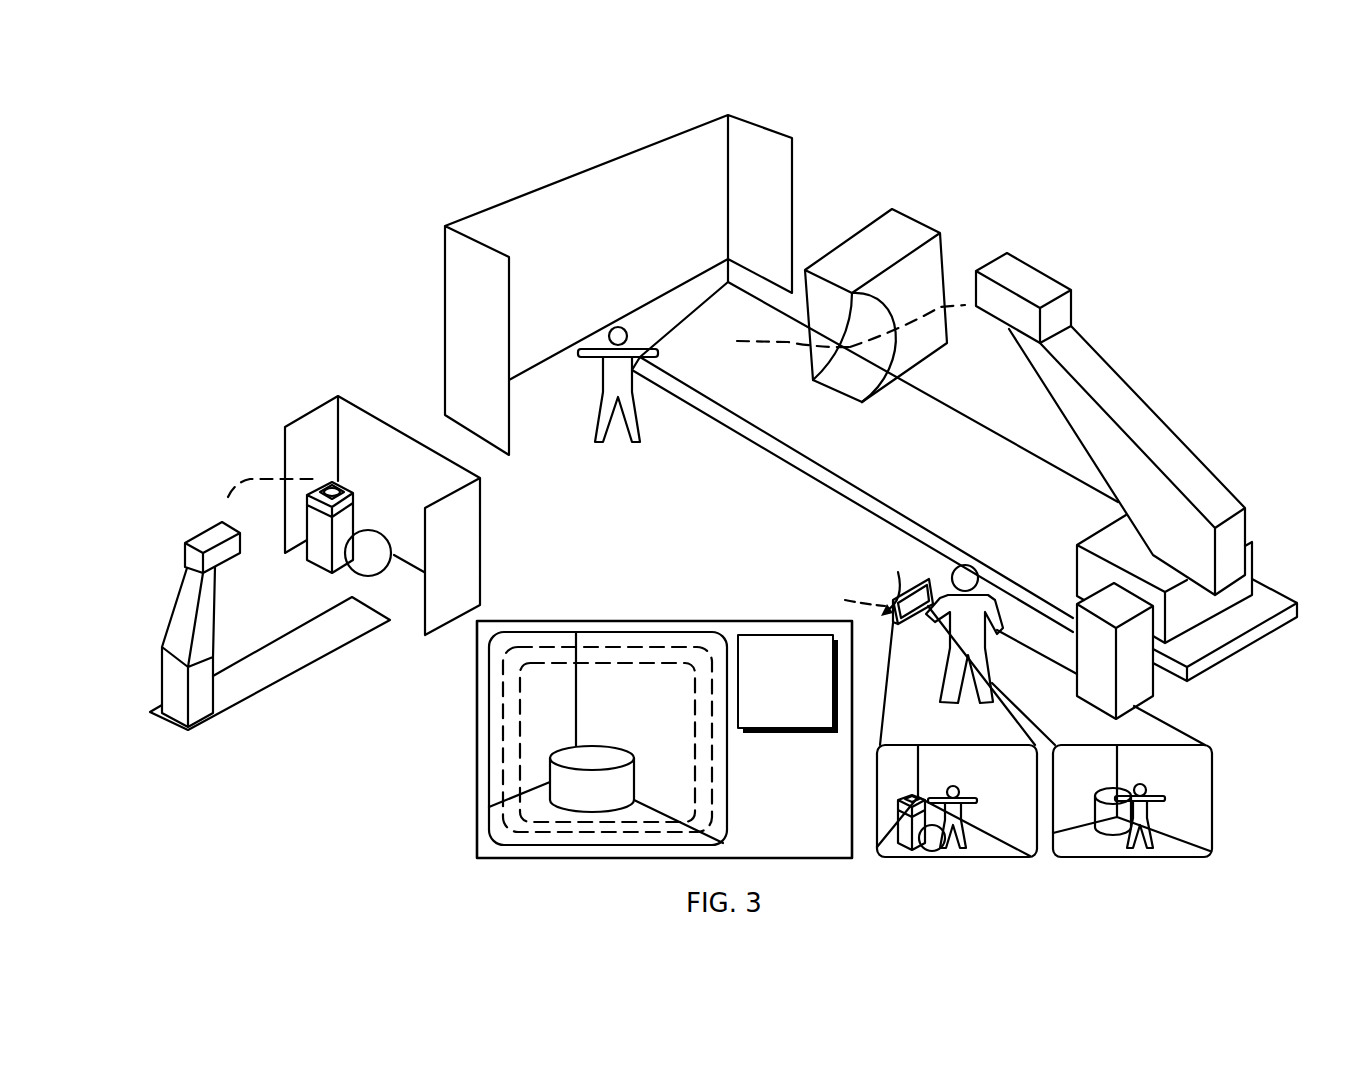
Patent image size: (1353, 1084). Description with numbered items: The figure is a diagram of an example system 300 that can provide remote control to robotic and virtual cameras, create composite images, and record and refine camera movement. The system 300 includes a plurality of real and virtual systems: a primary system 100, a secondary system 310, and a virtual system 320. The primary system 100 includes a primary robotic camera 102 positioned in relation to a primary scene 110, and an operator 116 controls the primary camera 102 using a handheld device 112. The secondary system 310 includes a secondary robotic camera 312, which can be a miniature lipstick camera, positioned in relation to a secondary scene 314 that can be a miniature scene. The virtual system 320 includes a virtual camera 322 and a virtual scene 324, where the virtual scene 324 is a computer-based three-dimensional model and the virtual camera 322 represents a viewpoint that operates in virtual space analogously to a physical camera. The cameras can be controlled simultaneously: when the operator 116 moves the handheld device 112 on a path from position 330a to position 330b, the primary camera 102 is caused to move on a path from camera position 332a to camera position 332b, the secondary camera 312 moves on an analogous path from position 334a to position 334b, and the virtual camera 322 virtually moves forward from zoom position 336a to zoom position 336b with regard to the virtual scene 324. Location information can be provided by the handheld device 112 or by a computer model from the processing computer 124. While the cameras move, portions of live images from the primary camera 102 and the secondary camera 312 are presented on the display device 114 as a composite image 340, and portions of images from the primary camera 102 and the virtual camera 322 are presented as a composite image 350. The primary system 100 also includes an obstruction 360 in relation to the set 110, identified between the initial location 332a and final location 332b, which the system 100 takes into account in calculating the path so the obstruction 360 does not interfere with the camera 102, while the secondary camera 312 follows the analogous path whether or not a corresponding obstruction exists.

The system 300 is at (236, 220).
The secondary system 310 is at (314, 538).
The secondary robotic camera 312 is at (198, 540).
The secondary scene 314 is at (398, 634).
The virtual system 320 is at (632, 709).
The virtual camera 322 is at (788, 684).
The virtual scene 324 is at (728, 777).
The path position 330a is at (870, 592).
The path position 330b is at (845, 600).
The camera position 332a is at (965, 305).
The camera position 332b is at (737, 341).
The camera position 334a is at (224, 508).
The camera position 334b is at (310, 478).
The zoom position 336a is at (587, 647).
The zoom position 336b is at (613, 663).
The composite image 340 is at (993, 857).
The composite image 350 is at (1165, 857).
The obstruction 360 is at (908, 212).
The primary system 100 is at (1136, 448).
The primary robotic camera 102 is at (1040, 271).
The primary scene 110 is at (688, 462).
The handheld device 112 is at (916, 598).
The display device 114 is at (919, 597).
The operator 116 is at (983, 652).
The processing computer 124 is at (1153, 697).